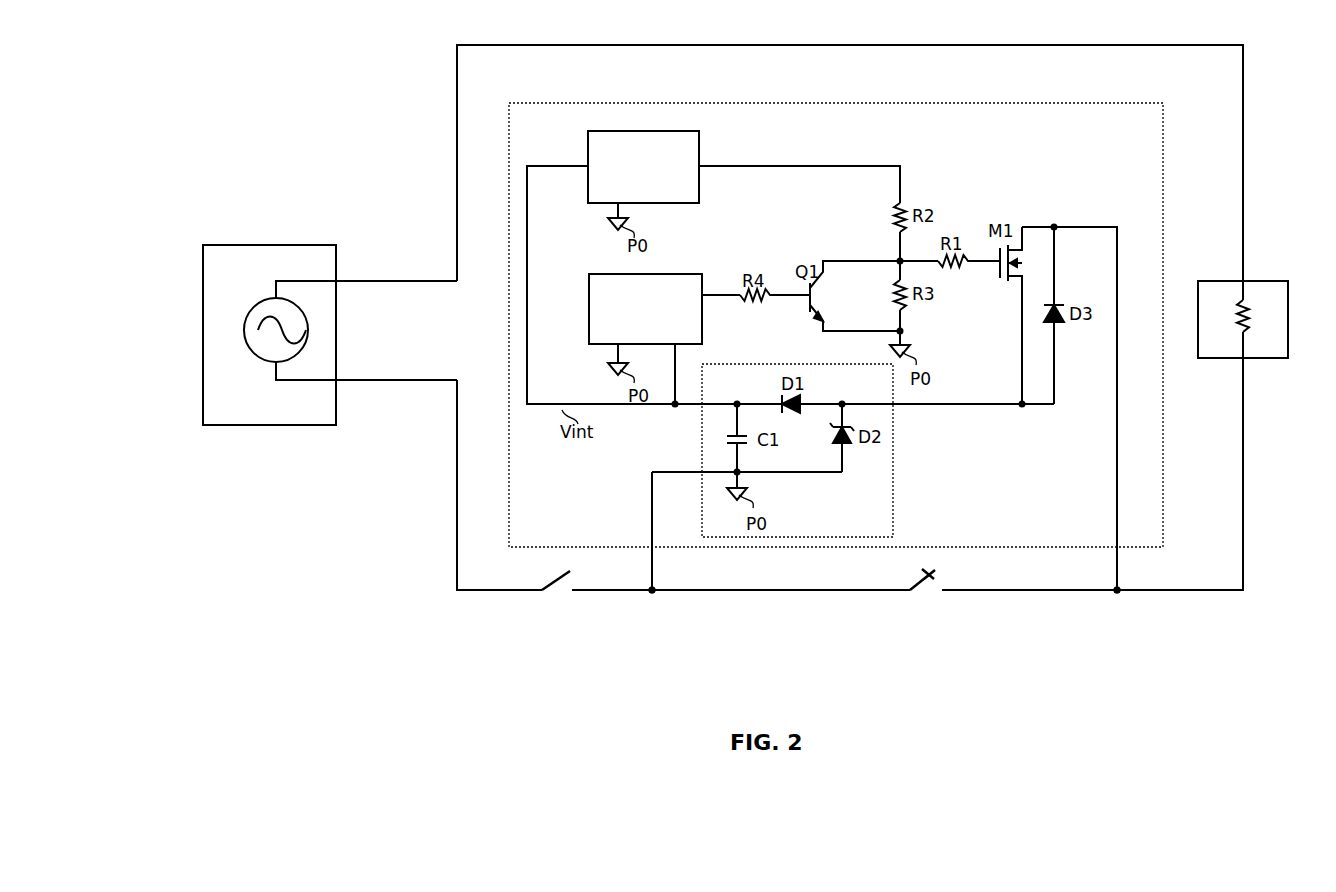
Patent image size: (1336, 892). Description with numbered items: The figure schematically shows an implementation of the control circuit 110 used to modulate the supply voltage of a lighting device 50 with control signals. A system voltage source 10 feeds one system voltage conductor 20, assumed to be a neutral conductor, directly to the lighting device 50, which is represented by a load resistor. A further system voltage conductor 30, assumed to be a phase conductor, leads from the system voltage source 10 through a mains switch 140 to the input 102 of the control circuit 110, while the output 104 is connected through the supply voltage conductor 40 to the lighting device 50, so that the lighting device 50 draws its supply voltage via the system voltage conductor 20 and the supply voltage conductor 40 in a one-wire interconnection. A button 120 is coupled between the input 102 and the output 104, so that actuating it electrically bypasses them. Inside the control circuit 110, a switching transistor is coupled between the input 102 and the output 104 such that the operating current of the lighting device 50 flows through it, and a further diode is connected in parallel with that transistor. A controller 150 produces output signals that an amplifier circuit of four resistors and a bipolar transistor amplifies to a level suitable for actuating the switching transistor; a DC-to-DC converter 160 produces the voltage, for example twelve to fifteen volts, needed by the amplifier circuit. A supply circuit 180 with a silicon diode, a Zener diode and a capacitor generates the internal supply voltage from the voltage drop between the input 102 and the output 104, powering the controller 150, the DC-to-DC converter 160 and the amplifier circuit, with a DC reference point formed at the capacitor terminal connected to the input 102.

The system voltage source 10 is at (232, 245).
The system voltage conductor 20 is at (390, 281).
The system voltage conductor 30 is at (372, 381).
The supply voltage conductor 40 is at (1200, 592).
The lighting device 50 is at (1265, 360).
The control circuit 110 is at (598, 103).
The button 120 is at (924, 594).
The mains switch 140 is at (557, 594).
The input 102 is at (656, 594).
The output 104 is at (1121, 594).
The controller 150 is at (645, 309).
The DC-to-DC converter 160 is at (643, 167).
The supply circuit 180 is at (895, 503).